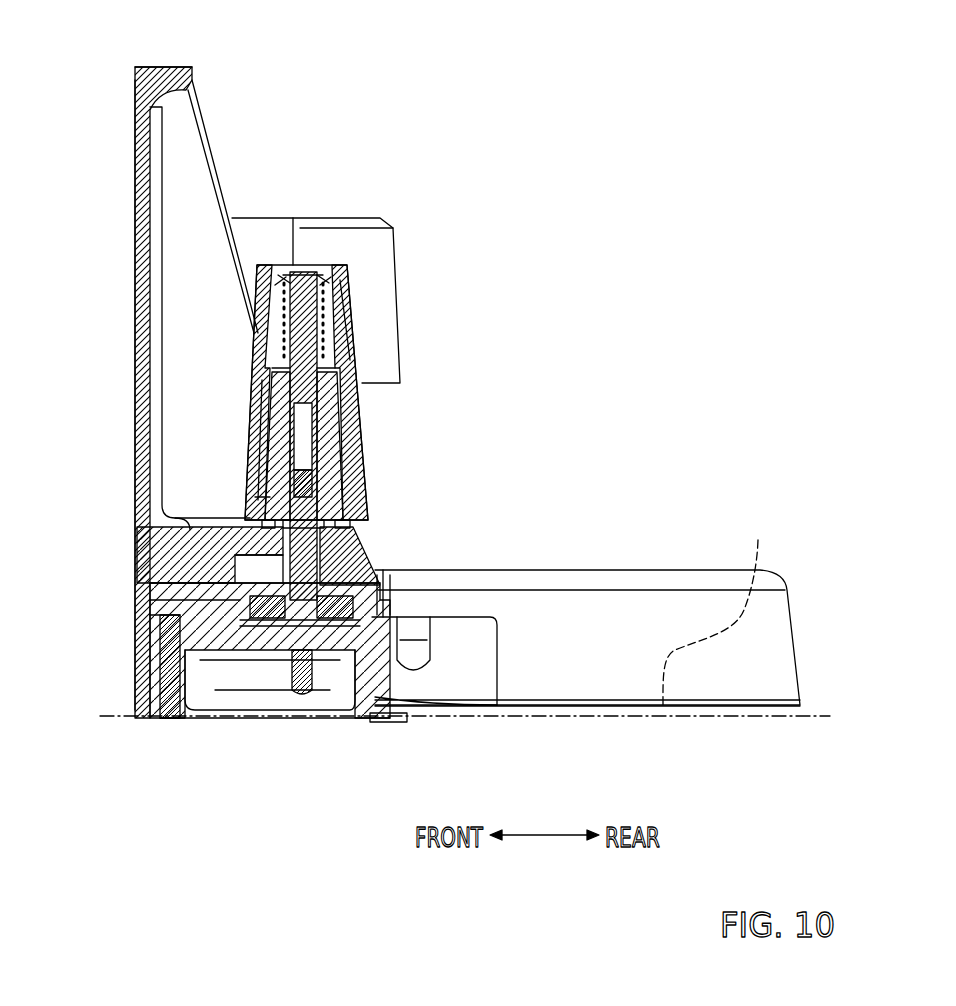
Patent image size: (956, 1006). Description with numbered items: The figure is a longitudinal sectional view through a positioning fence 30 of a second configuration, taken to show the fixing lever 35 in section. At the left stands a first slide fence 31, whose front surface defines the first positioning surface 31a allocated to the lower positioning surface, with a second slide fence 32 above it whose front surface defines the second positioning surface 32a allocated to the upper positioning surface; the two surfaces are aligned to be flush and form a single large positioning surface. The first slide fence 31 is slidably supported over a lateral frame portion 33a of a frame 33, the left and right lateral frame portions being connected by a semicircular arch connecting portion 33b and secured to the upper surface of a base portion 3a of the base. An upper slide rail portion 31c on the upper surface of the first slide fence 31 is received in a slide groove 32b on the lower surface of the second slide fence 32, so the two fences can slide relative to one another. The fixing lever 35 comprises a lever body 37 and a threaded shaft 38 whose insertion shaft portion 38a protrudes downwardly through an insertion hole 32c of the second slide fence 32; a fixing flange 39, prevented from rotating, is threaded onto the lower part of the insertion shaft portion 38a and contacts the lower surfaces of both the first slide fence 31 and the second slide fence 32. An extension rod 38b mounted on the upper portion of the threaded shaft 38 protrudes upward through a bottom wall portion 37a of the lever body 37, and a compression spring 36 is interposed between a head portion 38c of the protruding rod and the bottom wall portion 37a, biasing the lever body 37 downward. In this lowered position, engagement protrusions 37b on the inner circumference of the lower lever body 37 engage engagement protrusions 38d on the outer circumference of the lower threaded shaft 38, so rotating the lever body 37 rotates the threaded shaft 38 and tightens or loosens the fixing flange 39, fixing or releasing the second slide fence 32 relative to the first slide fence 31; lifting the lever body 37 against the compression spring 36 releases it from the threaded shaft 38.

The positioning fence 30 is at (128, 76).
The first slide fence 31 is at (148, 663).
The first positioning surface 31a is at (137, 632).
The upper slide rail portion 31c is at (200, 548).
The second slide fence 32 is at (163, 427).
The second positioning surface 32a is at (137, 358).
The slide groove 32b is at (137, 562).
The insertion hole 32c is at (256, 503).
The frame 33 is at (565, 553).
The lateral frame portion 33a is at (163, 720).
The arch connecting portion 33b is at (623, 608).
The base portion 3a is at (758, 555).
The fixing lever 35 is at (364, 310).
The compression spring 36 is at (365, 272).
The lever body 37 is at (358, 412).
The bottom wall portion 37a is at (360, 350).
The engagement protrusion 37b is at (256, 482).
The threaded shaft 38 is at (338, 503).
The insertion shaft portion 38a is at (343, 537).
The extension rod 38b is at (285, 268).
The head portion 38c is at (320, 268).
The engagement protrusion 38d is at (358, 477).
The fixing flange 39 is at (385, 600).